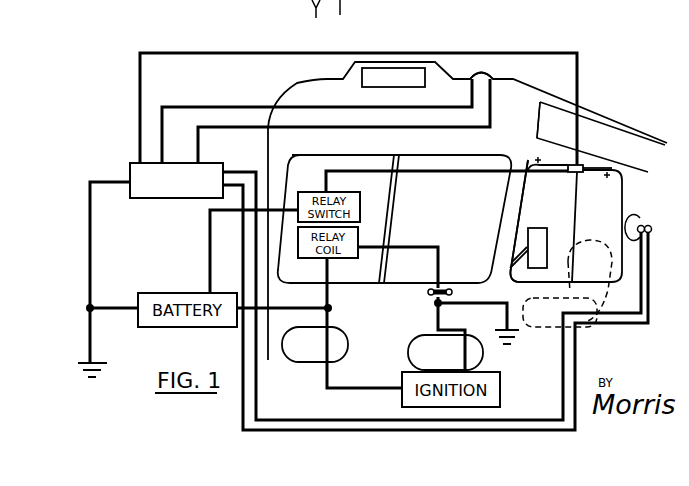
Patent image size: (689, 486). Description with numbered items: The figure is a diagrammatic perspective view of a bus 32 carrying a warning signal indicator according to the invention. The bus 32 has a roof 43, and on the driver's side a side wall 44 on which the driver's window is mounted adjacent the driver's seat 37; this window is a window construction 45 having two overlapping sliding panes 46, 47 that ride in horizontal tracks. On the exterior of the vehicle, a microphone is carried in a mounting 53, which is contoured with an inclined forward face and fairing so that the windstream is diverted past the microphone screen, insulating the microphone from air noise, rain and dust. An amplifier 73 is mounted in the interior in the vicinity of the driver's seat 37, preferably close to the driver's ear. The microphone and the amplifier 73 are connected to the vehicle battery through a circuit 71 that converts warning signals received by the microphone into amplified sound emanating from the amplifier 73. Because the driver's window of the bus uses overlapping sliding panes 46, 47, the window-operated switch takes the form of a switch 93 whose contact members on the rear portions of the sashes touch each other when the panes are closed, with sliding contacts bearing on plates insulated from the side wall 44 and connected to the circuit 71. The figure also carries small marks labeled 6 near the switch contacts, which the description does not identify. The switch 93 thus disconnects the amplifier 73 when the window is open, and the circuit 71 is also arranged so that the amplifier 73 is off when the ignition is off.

The terminal 6 is at (538, 163).
The bus 32 is at (623, 122).
The seat 37 is at (544, 330).
The roof 43 is at (327, 79).
The side wall 44 is at (597, 162).
The window construction 45 is at (553, 275).
The sliding pane 46 is at (612, 238).
The sliding pane 47 is at (550, 160).
The mounting 53 is at (483, 70).
The circuit 71 is at (130, 170).
The amplifier 73 is at (643, 217).
The switch 93 is at (582, 166).